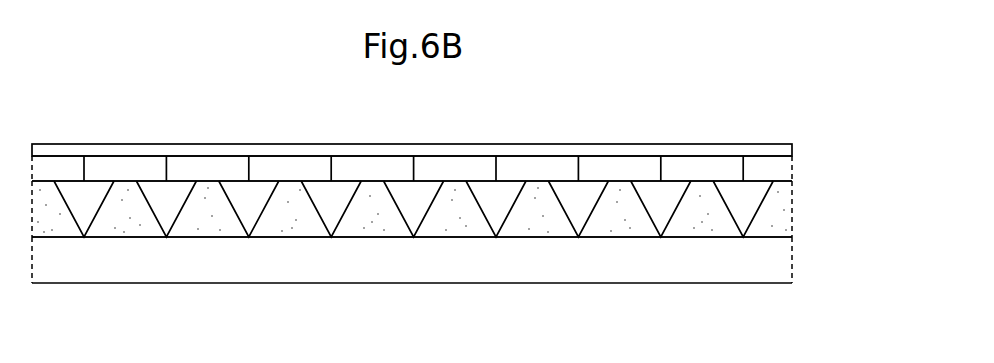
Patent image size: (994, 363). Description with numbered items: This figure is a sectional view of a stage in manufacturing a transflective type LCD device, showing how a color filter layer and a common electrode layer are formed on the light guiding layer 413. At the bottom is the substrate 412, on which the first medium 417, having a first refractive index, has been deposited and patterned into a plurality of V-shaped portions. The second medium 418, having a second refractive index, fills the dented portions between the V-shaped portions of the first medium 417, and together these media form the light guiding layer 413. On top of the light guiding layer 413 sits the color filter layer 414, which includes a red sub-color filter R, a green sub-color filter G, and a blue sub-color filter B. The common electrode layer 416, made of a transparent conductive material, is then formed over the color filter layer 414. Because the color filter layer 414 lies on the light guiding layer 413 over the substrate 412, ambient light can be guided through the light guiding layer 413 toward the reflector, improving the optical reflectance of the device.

The substrate 412 is at (778, 262).
The light guiding layer 413 is at (470, 225).
The color filter layer 414 is at (786, 171).
The common electrode layer 416 is at (773, 146).
The first medium 417 is at (528, 227).
The second medium 418 is at (583, 193).